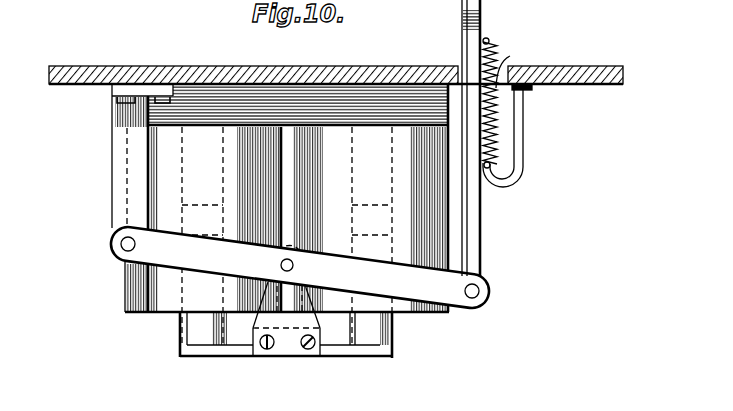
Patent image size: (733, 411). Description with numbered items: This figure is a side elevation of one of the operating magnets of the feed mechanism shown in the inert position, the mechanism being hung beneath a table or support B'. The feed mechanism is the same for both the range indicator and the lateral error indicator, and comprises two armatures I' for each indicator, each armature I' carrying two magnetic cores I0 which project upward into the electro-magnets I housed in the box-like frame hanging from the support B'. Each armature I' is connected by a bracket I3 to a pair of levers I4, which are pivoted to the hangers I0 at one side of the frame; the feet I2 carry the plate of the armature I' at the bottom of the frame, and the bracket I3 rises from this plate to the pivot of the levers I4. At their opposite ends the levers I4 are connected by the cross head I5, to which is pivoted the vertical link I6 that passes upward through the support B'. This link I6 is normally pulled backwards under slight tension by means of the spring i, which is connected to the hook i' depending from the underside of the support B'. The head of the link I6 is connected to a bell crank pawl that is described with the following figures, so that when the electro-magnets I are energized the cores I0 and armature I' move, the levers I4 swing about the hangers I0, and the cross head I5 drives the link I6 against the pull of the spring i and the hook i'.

The table top B' is at (336, 57).
The electro-magnet I is at (287, 214).
The magnetic core I0 is at (114, 180).
The feet I2 is at (190, 328).
The bracket I3 is at (284, 347).
The lever I4 is at (300, 267).
The cross head I5 is at (478, 284).
The link I6 is at (470, 58).
The armature I' is at (286, 367).
The spring i is at (514, 64).
The hook i' is at (520, 138).